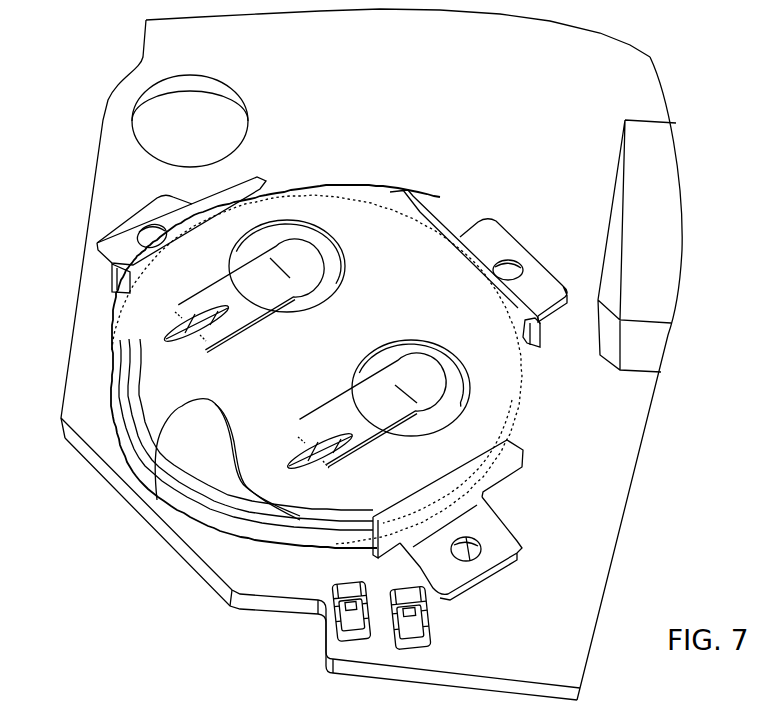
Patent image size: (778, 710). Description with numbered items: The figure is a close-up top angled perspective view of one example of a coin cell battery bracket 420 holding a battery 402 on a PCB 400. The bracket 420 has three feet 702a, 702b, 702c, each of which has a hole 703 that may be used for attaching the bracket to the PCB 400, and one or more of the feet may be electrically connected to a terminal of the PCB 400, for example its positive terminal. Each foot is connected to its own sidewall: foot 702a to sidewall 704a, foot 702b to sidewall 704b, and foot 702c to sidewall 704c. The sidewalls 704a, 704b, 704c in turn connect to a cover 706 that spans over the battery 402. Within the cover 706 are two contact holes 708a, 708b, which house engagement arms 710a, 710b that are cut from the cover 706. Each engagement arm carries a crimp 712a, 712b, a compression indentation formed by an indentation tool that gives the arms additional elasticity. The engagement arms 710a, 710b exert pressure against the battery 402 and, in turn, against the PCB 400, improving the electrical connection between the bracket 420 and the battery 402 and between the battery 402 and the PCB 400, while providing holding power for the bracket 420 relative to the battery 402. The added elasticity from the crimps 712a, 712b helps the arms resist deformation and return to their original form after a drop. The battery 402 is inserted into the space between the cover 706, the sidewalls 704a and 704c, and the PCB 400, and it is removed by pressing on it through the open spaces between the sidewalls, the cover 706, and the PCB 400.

The PCB 400 is at (605, 70).
The battery 402 is at (210, 462).
The coin cell battery bracket 420 is at (196, 465).
The foot 702a is at (438, 571).
The foot 702b is at (538, 282).
The foot 702c is at (157, 210).
The hole 703 is at (510, 262).
The sidewall 704a is at (378, 543).
The sidewall 704b is at (440, 215).
The sidewall 704c is at (235, 198).
The cover 706 is at (153, 497).
The contact hole 708a is at (433, 348).
The contact hole 708b is at (272, 222).
The engagement arm 710a is at (398, 375).
The engagement arm 710b is at (310, 252).
The crimp 712a is at (290, 456).
The crimp 712b is at (175, 333).